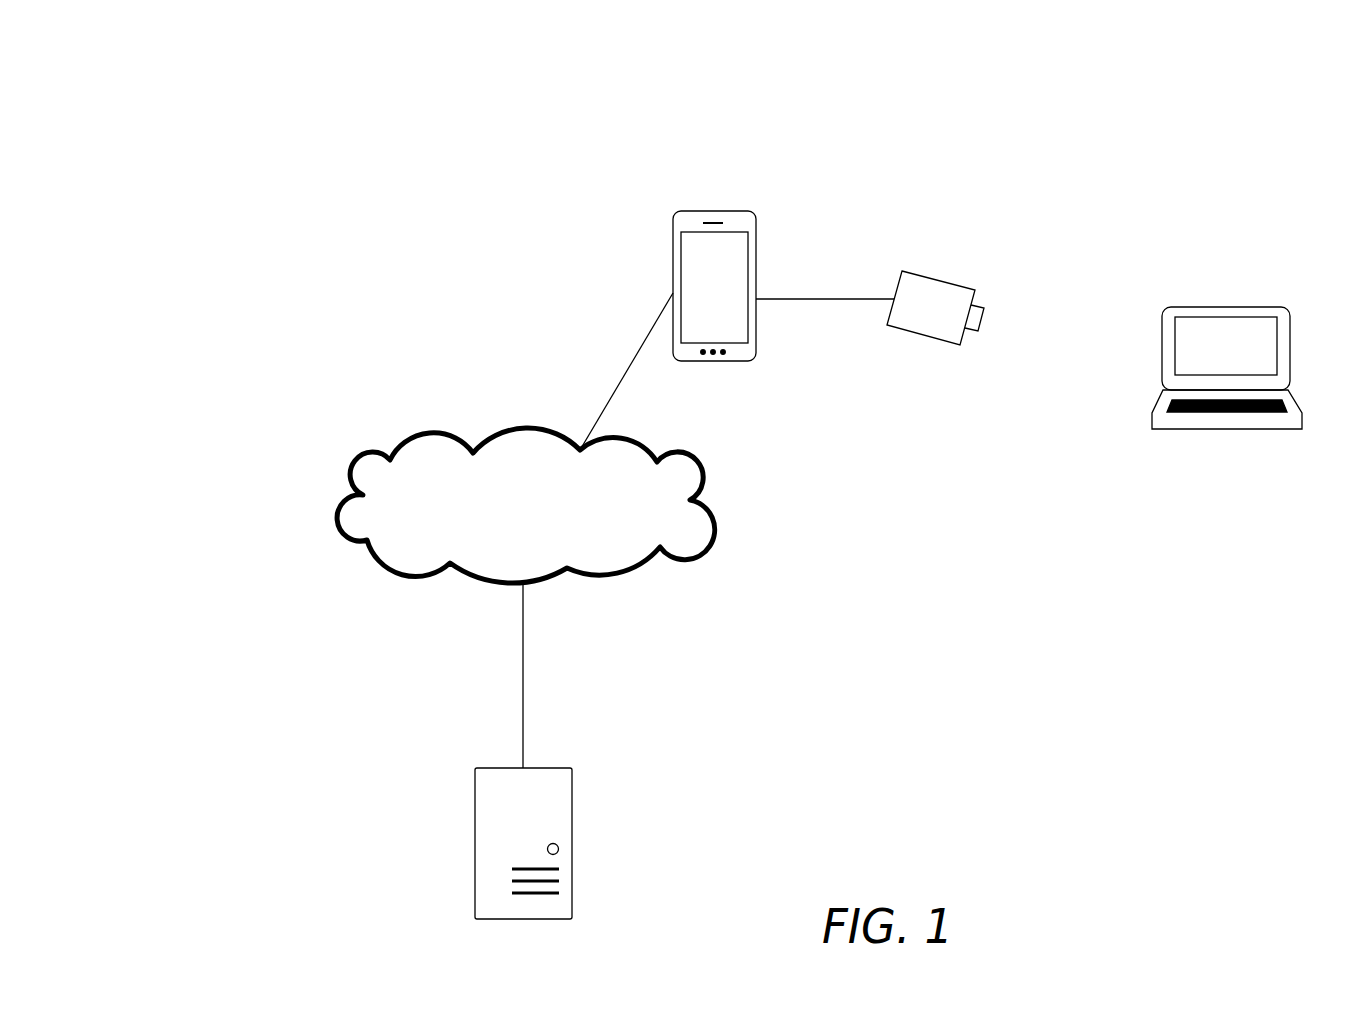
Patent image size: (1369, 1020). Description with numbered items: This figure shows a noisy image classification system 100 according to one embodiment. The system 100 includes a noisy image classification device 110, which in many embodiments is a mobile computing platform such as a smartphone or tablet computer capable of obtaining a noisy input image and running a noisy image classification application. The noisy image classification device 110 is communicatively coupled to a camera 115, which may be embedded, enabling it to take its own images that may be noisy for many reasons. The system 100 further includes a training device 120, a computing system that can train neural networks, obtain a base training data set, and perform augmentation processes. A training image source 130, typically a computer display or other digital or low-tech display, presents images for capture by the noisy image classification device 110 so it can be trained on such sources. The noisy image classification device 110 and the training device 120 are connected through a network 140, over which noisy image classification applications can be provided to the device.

The noisy image classification system 100 is at (346, 197).
The noisy image classification device 110 is at (756, 255).
The camera 115 is at (927, 337).
The training device 120 is at (572, 841).
The training image source 130 is at (1183, 307).
The network 140 is at (522, 430).